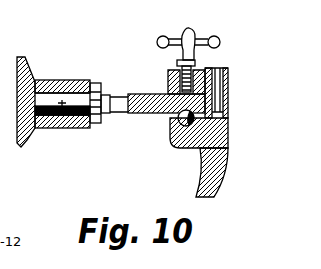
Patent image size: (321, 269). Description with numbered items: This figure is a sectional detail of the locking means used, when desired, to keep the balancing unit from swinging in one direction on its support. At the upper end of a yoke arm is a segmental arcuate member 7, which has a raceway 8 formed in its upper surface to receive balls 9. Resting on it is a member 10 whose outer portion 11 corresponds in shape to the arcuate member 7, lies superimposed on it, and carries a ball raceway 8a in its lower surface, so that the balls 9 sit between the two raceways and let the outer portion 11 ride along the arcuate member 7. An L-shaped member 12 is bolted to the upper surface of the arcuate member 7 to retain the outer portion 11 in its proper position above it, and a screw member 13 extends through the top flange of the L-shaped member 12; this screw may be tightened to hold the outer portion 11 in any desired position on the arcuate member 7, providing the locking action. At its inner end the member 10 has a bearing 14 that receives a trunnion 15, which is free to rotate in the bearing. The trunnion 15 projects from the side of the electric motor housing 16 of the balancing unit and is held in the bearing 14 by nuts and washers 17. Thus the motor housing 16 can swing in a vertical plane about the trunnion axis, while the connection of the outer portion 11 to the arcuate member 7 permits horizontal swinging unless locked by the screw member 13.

The arcuate member 7 is at (192, 150).
The raceway 8 is at (176, 142).
The ball raceway 8a is at (178, 76).
The balls 9 is at (180, 119).
The member 10 is at (122, 95).
The outer portion 11 is at (170, 97).
The L-shaped member 12 is at (201, 82).
The screw member 13 is at (185, 28).
The bearing 14 is at (58, 80).
The trunnion 15 is at (62, 120).
The electric motor housing 16 is at (27, 148).
The nuts and washers 17 is at (96, 122).